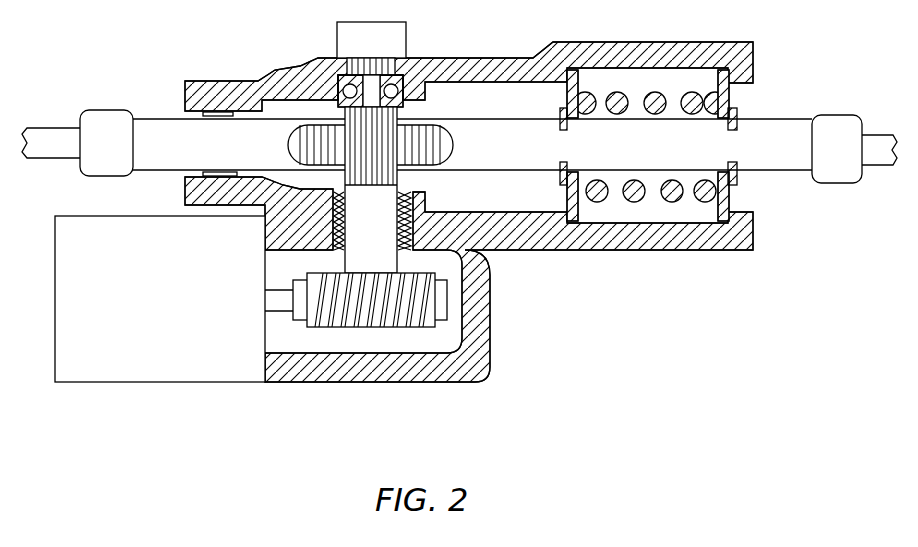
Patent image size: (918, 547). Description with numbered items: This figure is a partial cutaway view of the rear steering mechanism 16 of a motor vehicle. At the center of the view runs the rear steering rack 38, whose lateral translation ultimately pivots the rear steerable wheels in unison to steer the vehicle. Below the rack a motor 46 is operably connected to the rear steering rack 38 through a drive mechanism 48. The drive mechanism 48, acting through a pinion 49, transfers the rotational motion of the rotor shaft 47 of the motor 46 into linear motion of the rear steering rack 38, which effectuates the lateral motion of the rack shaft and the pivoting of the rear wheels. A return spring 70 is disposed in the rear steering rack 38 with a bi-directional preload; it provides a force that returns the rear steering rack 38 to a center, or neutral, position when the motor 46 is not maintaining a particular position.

The rear steering mechanism 16 is at (720, 340).
The rear steering rack 38 is at (790, 122).
The motor 46 is at (147, 363).
The rotor shaft 47 is at (278, 307).
The drive mechanism 48 is at (444, 300).
The pinion 49 is at (352, 122).
The return spring 70 is at (670, 203).